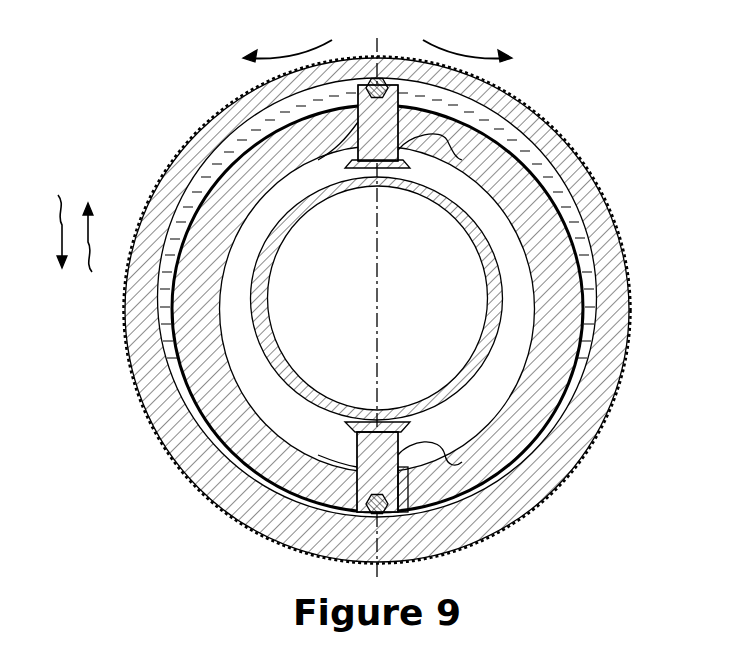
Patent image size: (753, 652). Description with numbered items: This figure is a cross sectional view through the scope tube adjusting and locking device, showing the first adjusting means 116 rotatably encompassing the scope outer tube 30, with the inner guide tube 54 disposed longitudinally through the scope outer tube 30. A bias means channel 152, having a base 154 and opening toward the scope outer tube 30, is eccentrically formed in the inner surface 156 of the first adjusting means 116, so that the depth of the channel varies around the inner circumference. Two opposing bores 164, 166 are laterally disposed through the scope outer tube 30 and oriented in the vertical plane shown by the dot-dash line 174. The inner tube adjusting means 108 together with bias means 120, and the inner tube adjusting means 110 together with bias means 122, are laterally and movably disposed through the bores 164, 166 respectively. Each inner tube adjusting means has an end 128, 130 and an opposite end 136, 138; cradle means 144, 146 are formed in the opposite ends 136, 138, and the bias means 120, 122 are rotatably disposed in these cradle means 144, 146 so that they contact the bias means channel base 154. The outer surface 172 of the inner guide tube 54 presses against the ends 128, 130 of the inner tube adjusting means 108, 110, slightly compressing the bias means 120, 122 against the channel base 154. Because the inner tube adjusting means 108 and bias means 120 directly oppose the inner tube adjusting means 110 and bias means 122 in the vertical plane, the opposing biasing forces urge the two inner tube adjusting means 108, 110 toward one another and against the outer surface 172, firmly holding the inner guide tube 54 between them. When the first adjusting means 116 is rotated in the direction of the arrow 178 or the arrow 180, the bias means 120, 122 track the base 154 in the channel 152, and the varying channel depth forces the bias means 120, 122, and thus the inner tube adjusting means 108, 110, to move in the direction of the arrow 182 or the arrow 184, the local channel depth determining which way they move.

The scope outer tube 30 is at (562, 333).
The inner guide tube 54 is at (480, 367).
The inner tube adjusting means 108 is at (402, 108).
The inner tube adjusting means 110 is at (412, 497).
The first adjusting means 116 is at (175, 158).
The bias means 120 is at (396, 86).
The bias means 122 is at (395, 518).
The end 128 is at (400, 135).
The end 130 is at (445, 440).
The opposite end 136 is at (318, 92).
The opposite end 138 is at (372, 522).
The cradle means 144 is at (285, 105).
The cradle means 146 is at (352, 470).
The bias means channel 152 is at (573, 228).
The bias means channel base 154 is at (598, 243).
The inner surface 156 is at (185, 365).
The bore 164 is at (270, 128).
The bore 166 is at (357, 497).
The outer surface 172 is at (205, 430).
The dot-dash line 174 is at (380, 56).
The arrow 178 is at (287, 33).
The arrow 180 is at (467, 33).
The arrow 182 is at (86, 257).
The arrow 184 is at (55, 213).